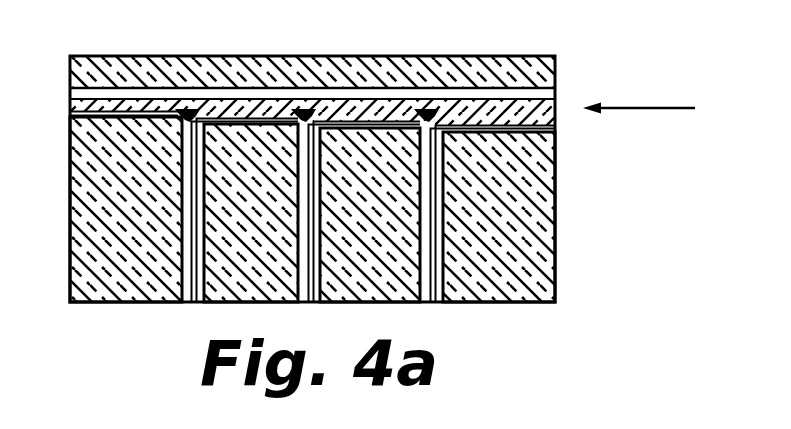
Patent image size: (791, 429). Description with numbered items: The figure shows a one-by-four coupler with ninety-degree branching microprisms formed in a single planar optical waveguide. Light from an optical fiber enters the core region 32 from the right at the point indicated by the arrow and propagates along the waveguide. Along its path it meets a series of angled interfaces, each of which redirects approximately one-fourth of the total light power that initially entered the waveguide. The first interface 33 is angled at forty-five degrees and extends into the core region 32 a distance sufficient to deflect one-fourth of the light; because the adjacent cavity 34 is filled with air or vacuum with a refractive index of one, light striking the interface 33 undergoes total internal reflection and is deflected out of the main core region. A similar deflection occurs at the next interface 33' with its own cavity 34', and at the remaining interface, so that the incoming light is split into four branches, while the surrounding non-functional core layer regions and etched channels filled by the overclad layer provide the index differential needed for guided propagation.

The core region 32 is at (550, 118).
The interface 33 is at (493, 151).
The interface 33' is at (361, 151).
The cavity 34 is at (423, 61).
The cavity 34' is at (288, 62).